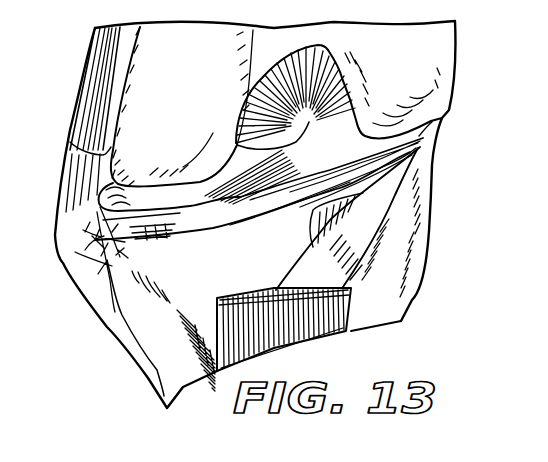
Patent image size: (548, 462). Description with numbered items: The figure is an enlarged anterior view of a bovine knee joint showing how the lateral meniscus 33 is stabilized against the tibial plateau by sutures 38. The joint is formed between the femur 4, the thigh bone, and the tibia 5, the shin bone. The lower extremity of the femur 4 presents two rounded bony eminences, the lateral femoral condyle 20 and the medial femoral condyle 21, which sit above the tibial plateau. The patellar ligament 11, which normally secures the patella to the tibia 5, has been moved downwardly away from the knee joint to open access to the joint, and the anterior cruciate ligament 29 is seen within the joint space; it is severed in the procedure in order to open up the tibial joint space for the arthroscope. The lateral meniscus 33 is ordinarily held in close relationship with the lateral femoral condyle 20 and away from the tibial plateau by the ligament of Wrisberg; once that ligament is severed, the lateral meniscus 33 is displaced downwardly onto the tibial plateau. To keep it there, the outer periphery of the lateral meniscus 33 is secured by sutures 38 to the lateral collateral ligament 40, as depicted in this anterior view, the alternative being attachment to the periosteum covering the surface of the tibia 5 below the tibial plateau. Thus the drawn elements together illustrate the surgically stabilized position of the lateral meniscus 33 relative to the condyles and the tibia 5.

The lateral collateral ligament 40 is at (72, 123).
The lateral femoral condyle 20 is at (70, 142).
The anterior cruciate ligament 29 is at (302, 133).
The medial femoral condyle 21 is at (428, 116).
The lateral meniscus 33 is at (167, 238).
The sutures 38 is at (67, 238).
The patellar ligament 11 is at (309, 324).
The tibia 5 is at (177, 377).
The femur 4 is at (167, 461).